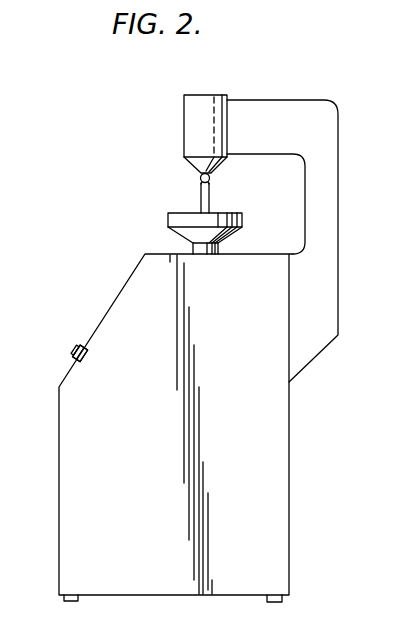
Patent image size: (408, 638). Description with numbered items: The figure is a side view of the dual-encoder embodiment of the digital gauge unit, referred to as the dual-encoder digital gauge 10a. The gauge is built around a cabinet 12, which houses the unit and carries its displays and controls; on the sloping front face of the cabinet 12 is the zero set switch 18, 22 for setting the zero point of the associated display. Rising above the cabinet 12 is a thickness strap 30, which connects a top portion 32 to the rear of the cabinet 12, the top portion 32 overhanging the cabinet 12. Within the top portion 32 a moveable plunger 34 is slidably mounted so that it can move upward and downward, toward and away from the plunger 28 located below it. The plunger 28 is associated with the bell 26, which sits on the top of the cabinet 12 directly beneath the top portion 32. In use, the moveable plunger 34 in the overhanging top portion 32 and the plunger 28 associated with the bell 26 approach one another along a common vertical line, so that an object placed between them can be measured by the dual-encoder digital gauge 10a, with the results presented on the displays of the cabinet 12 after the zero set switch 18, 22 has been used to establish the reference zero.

The dual-encoder digital gauge 10a is at (97, 222).
The cabinet 12 is at (59, 490).
The zero set switch 18 is at (72, 352).
The zero set switch 22 is at (80, 353).
The bell 26 is at (243, 221).
The plunger 28 is at (210, 190).
The thickness strap 30 is at (339, 142).
The top portion 32 is at (223, 94).
The moveable plunger 34 is at (200, 178).